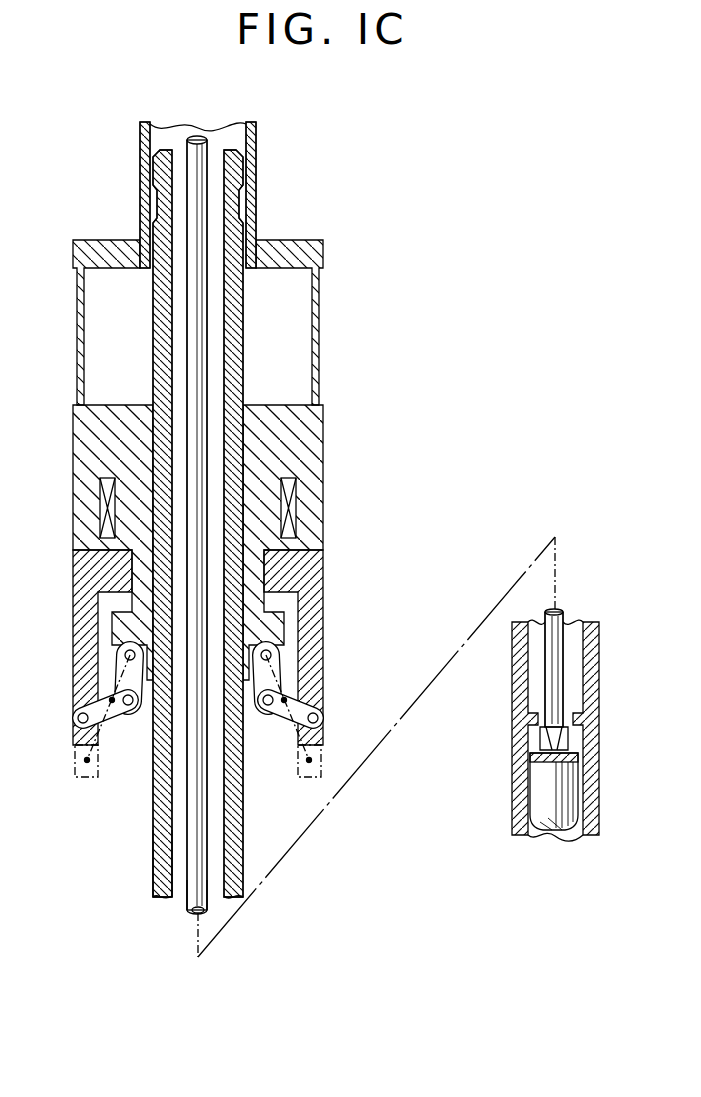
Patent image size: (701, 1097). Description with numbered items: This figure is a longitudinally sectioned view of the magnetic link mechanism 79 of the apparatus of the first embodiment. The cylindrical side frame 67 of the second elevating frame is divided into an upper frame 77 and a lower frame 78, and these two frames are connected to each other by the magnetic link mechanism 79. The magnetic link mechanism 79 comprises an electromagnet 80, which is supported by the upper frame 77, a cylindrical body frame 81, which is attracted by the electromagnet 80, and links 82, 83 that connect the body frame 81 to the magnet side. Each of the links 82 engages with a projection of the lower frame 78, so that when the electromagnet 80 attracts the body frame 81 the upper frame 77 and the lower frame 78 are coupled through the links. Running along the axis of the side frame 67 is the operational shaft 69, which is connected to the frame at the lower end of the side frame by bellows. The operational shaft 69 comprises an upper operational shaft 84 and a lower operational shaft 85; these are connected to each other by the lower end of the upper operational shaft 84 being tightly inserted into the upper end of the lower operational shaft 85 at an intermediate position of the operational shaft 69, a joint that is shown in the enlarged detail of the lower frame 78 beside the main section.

The cylindrical side frame 67 is at (265, 152).
The operational shaft 69 is at (187, 808).
The upper frame 77 is at (256, 172).
The lower frame 78 is at (158, 854).
The magnetic link mechanism 79 is at (326, 452).
The electromagnet 80 is at (100, 507).
The cylindrical body frame 81 is at (320, 601).
The link 82 is at (122, 659).
The link 83 is at (82, 708).
The upper operational shaft 84 is at (187, 905).
The lower operational shaft 85 is at (536, 797).